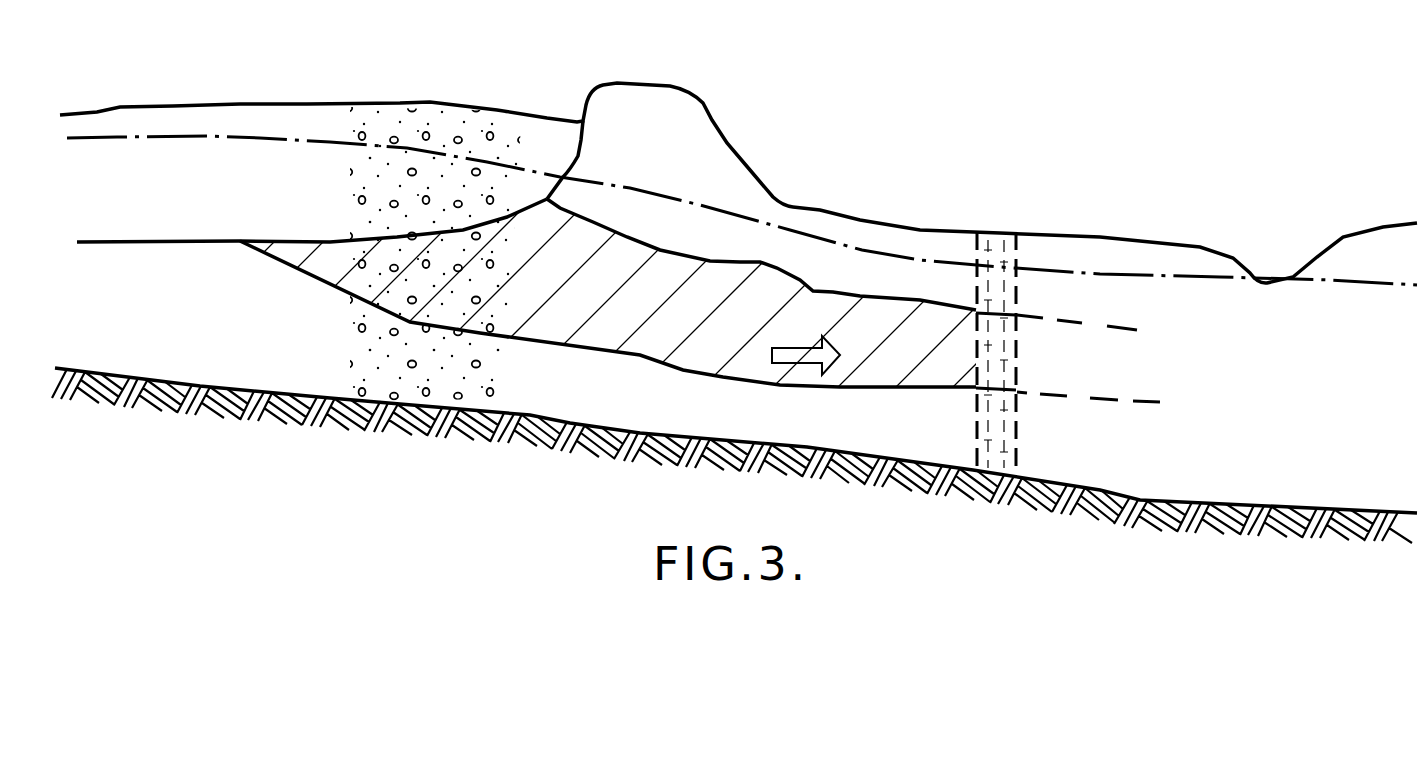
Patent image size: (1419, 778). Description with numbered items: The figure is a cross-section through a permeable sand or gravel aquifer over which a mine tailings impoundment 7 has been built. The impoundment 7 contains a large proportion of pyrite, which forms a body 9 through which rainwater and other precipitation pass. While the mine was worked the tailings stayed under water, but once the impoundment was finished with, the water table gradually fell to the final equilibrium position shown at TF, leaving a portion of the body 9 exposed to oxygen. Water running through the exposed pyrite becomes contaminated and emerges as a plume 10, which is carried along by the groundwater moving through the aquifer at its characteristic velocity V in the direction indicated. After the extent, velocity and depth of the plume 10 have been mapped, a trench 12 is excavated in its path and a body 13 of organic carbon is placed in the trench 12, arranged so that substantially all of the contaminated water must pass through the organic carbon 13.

The tailings impoundment 7 is at (338, 135).
The body of pyrite tailings 9 is at (235, 183).
The plume of contaminated run-through water 10 is at (707, 337).
The trench 12 is at (1017, 425).
The body of organic carbon 13 is at (973, 403).
The final equilibrium position of the water table TF is at (162, 139).
The characteristic groundwater velocity V is at (803, 340).